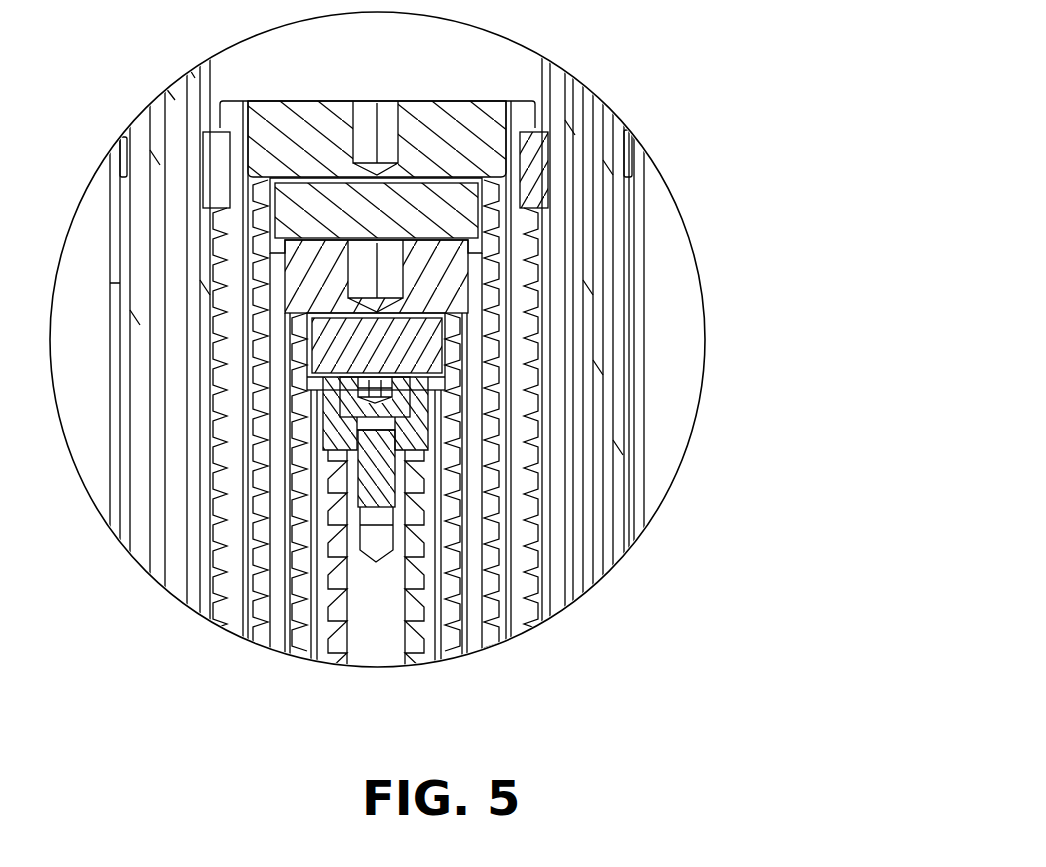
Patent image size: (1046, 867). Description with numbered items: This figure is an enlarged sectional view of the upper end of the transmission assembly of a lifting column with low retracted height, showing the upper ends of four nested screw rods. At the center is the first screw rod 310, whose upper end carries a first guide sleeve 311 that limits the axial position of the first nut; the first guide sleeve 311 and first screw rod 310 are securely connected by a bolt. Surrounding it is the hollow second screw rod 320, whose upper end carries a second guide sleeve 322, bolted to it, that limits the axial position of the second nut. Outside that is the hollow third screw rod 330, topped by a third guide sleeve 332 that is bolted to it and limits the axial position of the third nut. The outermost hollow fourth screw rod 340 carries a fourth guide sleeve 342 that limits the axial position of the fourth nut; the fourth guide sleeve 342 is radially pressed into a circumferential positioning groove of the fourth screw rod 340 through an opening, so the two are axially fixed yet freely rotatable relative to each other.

The first screw rod 310 is at (383, 603).
The first guide sleeve 311 is at (425, 412).
The second screw rod 320 is at (442, 463).
The second guide sleeve 322 is at (418, 305).
The third screw rod 330 is at (465, 335).
The third guide sleeve 332 is at (438, 128).
The fourth screw rod 340 is at (518, 257).
The fourth guide sleeve 342 is at (537, 170).